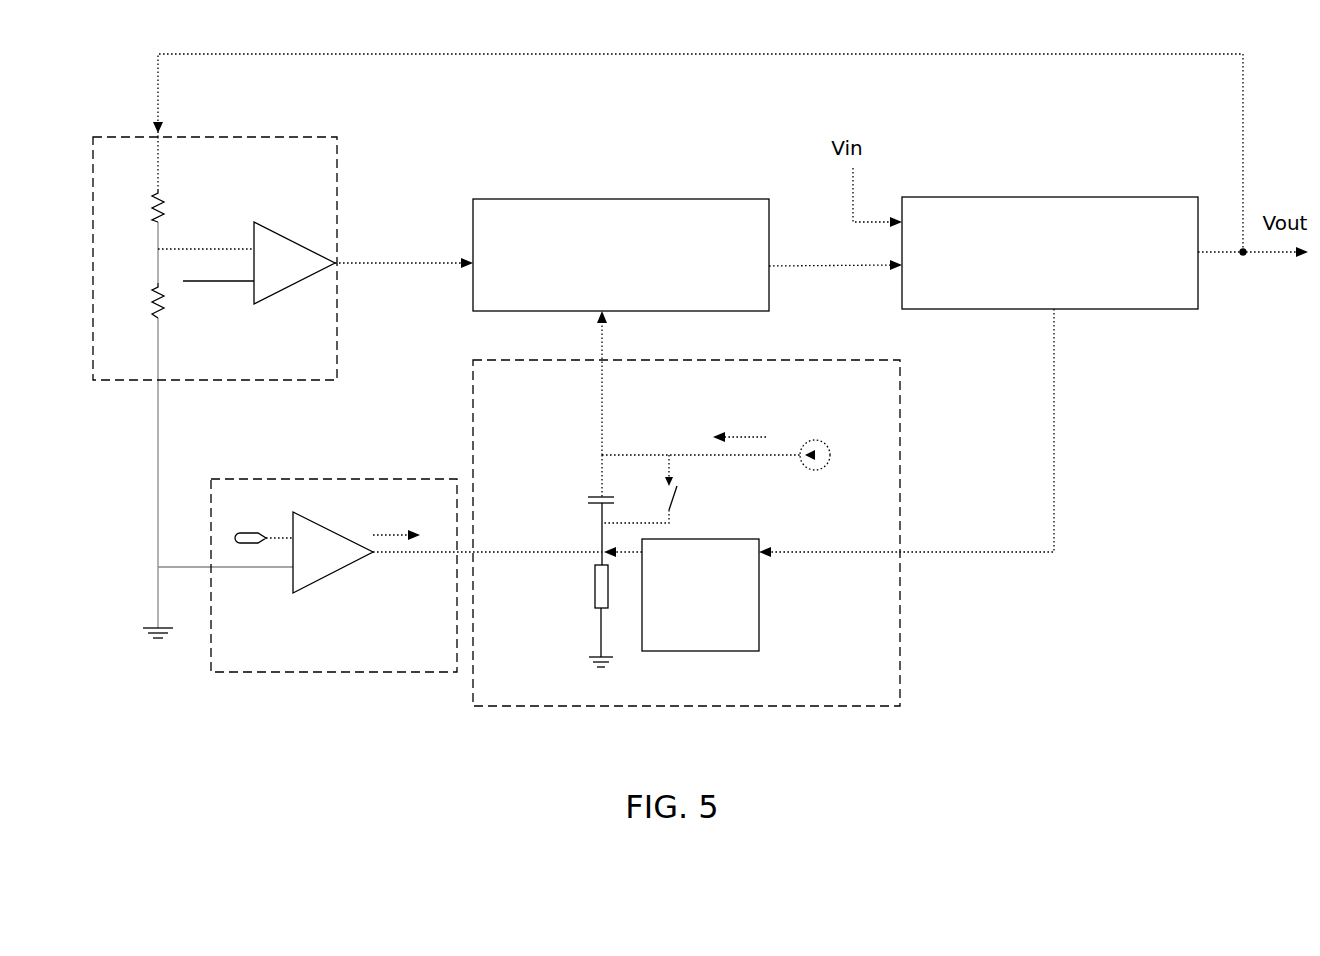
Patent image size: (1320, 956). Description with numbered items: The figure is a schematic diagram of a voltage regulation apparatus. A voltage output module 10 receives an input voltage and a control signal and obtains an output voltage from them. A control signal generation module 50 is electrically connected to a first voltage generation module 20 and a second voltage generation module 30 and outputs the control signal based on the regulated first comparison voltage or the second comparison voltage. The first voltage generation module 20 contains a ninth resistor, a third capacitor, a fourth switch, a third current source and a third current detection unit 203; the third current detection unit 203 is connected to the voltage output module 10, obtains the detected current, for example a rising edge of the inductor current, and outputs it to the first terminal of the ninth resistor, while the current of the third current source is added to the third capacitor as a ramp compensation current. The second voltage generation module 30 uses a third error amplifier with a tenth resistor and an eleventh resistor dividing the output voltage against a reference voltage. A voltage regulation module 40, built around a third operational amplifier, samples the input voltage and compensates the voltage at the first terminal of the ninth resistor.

The voltage output module 10 is at (1105, 197).
The first voltage generation module 20 is at (676, 360).
The second voltage generation module 30 is at (300, 140).
The voltage regulation module 40 is at (292, 479).
The control signal generation module 50 is at (676, 199).
The third current detection unit 203 is at (746, 622).